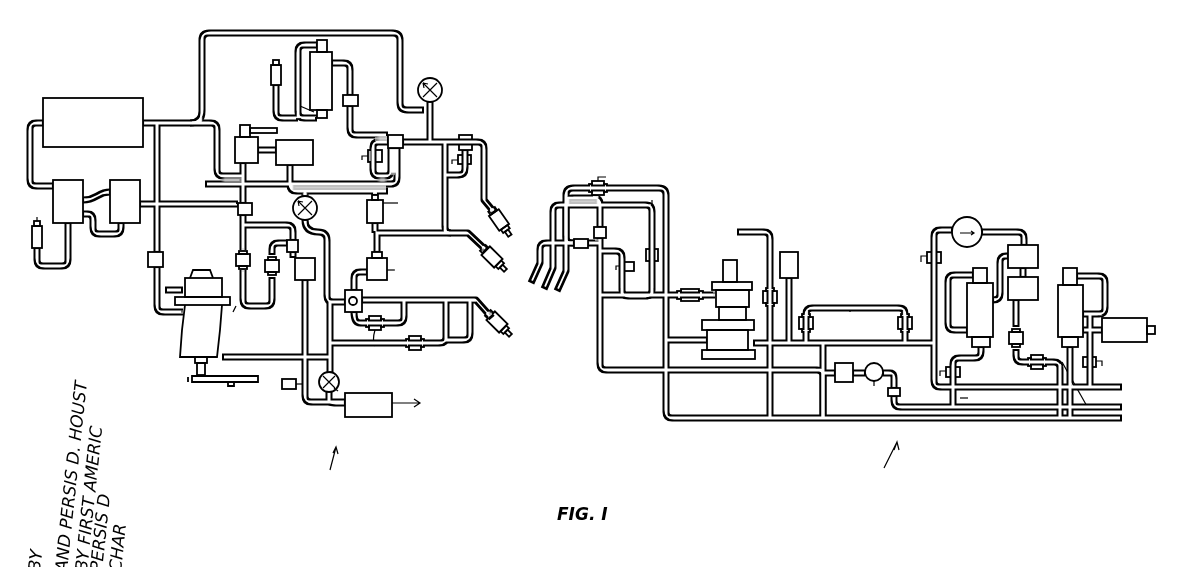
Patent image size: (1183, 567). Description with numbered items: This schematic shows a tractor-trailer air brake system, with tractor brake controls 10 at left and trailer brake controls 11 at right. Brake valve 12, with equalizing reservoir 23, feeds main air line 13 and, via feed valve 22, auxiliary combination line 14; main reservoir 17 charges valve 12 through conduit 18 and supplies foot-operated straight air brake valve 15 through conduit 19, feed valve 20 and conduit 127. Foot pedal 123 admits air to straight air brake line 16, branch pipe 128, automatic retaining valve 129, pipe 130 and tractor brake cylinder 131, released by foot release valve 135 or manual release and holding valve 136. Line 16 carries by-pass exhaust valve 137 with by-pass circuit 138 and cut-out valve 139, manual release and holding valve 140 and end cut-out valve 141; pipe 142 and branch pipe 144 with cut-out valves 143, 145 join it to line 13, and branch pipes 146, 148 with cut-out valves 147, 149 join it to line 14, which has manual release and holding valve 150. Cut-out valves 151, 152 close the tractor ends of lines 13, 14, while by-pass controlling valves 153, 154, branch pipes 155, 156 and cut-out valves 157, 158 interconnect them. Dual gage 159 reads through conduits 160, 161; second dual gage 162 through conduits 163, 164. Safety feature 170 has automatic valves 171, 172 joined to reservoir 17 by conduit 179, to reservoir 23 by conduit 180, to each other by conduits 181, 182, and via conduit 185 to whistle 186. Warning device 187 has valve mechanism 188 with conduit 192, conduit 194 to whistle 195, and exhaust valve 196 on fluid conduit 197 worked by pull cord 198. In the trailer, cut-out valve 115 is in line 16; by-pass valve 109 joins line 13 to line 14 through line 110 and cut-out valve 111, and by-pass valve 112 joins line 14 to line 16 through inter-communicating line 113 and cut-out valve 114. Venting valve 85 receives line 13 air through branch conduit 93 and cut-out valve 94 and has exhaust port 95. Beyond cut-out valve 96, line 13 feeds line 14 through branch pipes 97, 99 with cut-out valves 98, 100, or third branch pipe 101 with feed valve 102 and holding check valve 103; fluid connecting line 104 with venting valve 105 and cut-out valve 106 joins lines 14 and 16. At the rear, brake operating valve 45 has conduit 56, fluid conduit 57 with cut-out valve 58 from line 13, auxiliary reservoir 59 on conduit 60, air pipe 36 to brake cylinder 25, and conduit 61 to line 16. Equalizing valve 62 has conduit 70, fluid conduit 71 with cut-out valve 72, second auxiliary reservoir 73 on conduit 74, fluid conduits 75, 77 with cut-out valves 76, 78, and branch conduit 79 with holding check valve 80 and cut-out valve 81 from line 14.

The brake controls of the tractor 10 is at (330, 467).
The brake controls of the trailer 11 is at (884, 463).
The brake valve 12 is at (238, 134).
The main air line 13 is at (358, 182).
The auxiliary combination line 14 is at (238, 160).
The straight air brake valve 15 is at (202, 322).
The straight air brake line 16 is at (248, 356).
The main reservoir 17 is at (93, 122).
The conduit 18 is at (190, 120).
The conduit 19 is at (160, 148).
The feed valve 20 is at (163, 257).
The feed valve 22 is at (238, 208).
The equalizing reservoir 23 is at (294, 152).
The brake cylinder 25 is at (1128, 330).
The air pipe 36 is at (1096, 322).
The brake operating valve 45 is at (1070, 307).
The conduit 56 is at (1100, 272).
The fluid conduit 57 is at (1098, 384).
The cut-out valve 58 is at (1097, 361).
The auxiliary reservoir 59 is at (1023, 302).
The conduit 60 is at (1010, 326).
The conduit 61 is at (1088, 410).
The equalizing valve 62 is at (970, 307).
The conduit 70 is at (941, 257).
The fluid conduit 71 is at (976, 397).
The cut-out valve 72 is at (960, 372).
The second auxiliary reservoir 73 is at (1023, 261).
The conduit 74 is at (1000, 260).
The fluid conduit 75 is at (1006, 338).
The cut-out valve 76 is at (1040, 318).
The conduit 77 is at (1066, 392).
The cut-out valve 78 is at (1037, 372).
The branch conduit 79 is at (998, 230).
The holding check valve 80 is at (977, 220).
The cut-out valve 81 is at (934, 240).
The venting valve 85 is at (740, 276).
The branch conduit 93 is at (604, 302).
The cut-out valve 94 is at (704, 290).
The exhaust port 95 is at (780, 250).
The cut-out valve 96 is at (814, 318).
The branch pipe 97 is at (863, 306).
The cut-out valve 98 is at (906, 312).
The branch pipe 99 is at (838, 410).
The cut-out valve 100 is at (900, 396).
The third branch pipe 101 is at (872, 388).
The feed valve 102 is at (856, 356).
The holding check valve 103 is at (876, 363).
The fluid connecting line 104 is at (768, 380).
The venting valve 105 is at (798, 262).
The cut-out valve 106 is at (778, 298).
The by-pass valve 109 is at (606, 230).
The line 110 is at (618, 252).
The cut-out valve 111 is at (582, 250).
The by-pass valve 112 is at (658, 252).
The inter-communicating line 113 is at (655, 240).
The cut-out valve 114 is at (636, 266).
The cut-out valve 115 is at (604, 178).
The foot pedal 123 is at (237, 388).
The conduit 127 is at (158, 300).
The branch pipe 128 is at (340, 380).
The automatic retaining valve 129 is at (340, 388).
The pipe 130 is at (338, 406).
The brake cylinder 131 is at (382, 405).
The foot release valve 135 is at (286, 390).
The manual release and holding valve 136 is at (314, 278).
The by-pass exhaust valve 137 is at (363, 298).
The by-pass circuit 138 is at (398, 320).
The cut-out valve 139 is at (369, 347).
The manual release and holding valve 140 is at (392, 270).
The cut-out valve 141 is at (500, 316).
The pipe 142 is at (240, 182).
The cut-out valve 143 is at (274, 278).
The branch pipe 144 is at (377, 226).
The cut-out valve 145 is at (299, 246).
The branch pipe 146 is at (240, 282).
The cut-out valve 147 is at (240, 255).
The branch pipe 148 is at (239, 316).
The cut-out valve 149 is at (418, 350).
The manual release and holding valve 150 is at (420, 236).
The cut-out valve 151 is at (502, 210).
The cut-out valve 152 is at (484, 262).
The by-pass controlling valve 153 is at (391, 136).
The by-pass controlling valve 154 is at (472, 138).
The branch pipe 155 is at (412, 164).
The second branch pipe 156 is at (449, 186).
The cut-out valve 157 is at (372, 150).
The cut-out valve 158 is at (472, 160).
The dual gage 159 is at (441, 84).
The conduit 160 is at (404, 70).
The conduit 161 is at (432, 115).
The second dual gage 162 is at (360, 191).
The conduit 163 is at (258, 228).
The conduit 164 is at (315, 204).
The safety feature 170 is at (82, 259).
The automatic valve 171 is at (68, 201).
The automatic equalizing valve 172 is at (125, 201).
The conduit 179 is at (32, 163).
The conduit 180 is at (192, 208).
The conduit 181 is at (97, 188).
The conduit 182 is at (104, 236).
The conduit 185 is at (48, 272).
The whistle 186 is at (38, 218).
The additional warning device 187 is at (347, 59).
The valve mechanism 188 is at (292, 101).
The conduit 192 is at (296, 51).
The conduit 194 is at (273, 96).
The whistle 195 is at (271, 72).
The exhaust valve 196 is at (358, 95).
The fluid conduit 197 is at (352, 73).
The pull cord 198 is at (356, 108).